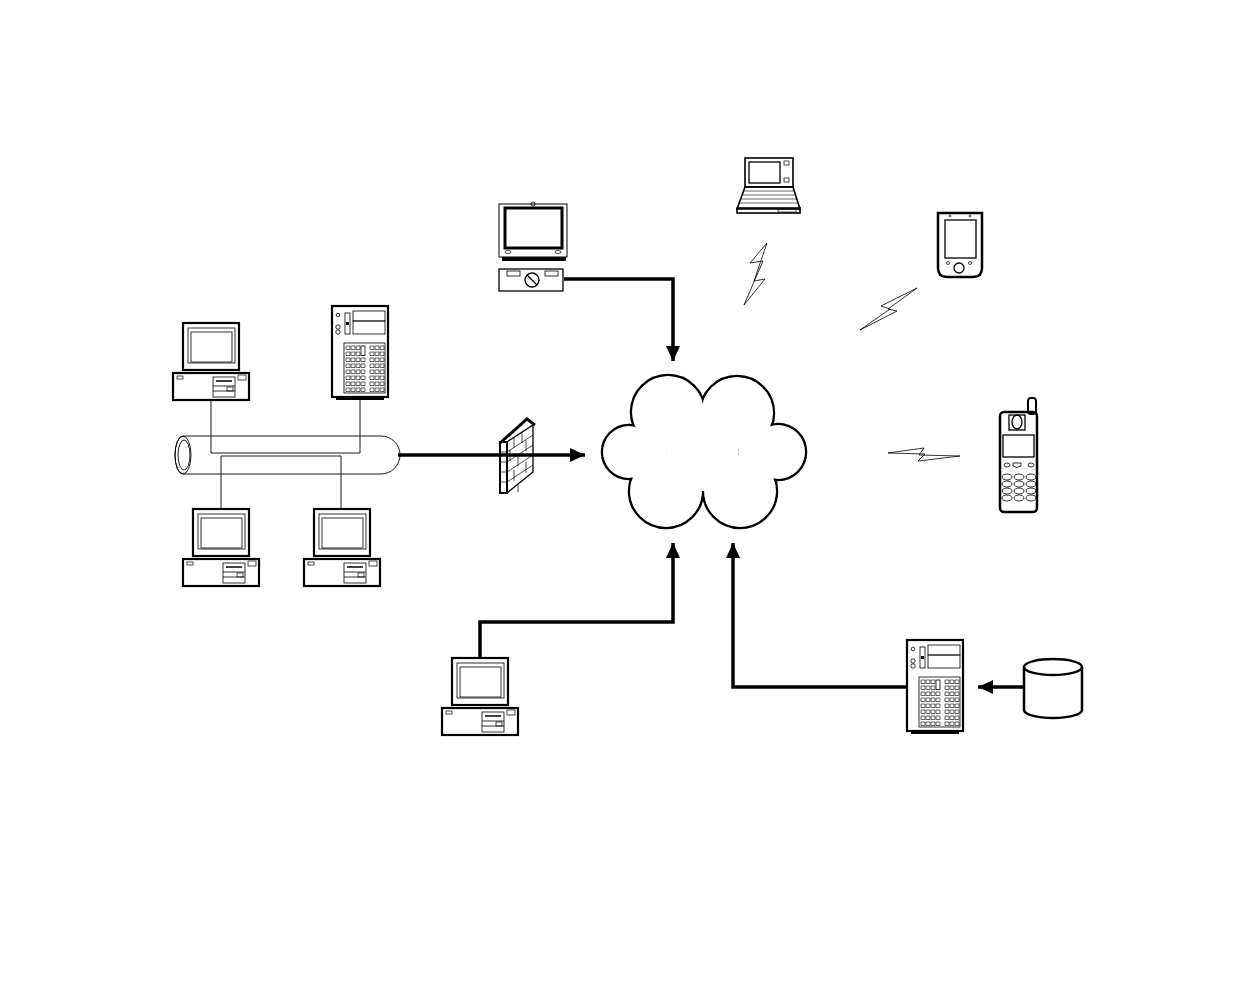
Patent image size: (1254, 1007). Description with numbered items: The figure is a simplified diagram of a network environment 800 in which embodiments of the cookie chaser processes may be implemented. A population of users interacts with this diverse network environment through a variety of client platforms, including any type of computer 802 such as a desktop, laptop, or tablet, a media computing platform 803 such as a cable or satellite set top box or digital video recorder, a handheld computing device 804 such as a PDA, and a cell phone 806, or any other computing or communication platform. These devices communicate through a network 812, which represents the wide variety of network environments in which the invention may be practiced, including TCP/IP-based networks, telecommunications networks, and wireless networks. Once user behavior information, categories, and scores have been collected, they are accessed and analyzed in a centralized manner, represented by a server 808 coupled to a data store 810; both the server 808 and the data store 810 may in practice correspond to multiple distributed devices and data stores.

The network environment 800 is at (1098, 117).
The computer 802 is at (183, 352).
The media computing platform 803 is at (499, 279).
The handheld computing device 804 is at (940, 213).
The cell phone 806 is at (1002, 414).
The server 808 is at (908, 640).
The data store 810 is at (1052, 658).
The network 812 is at (643, 390).